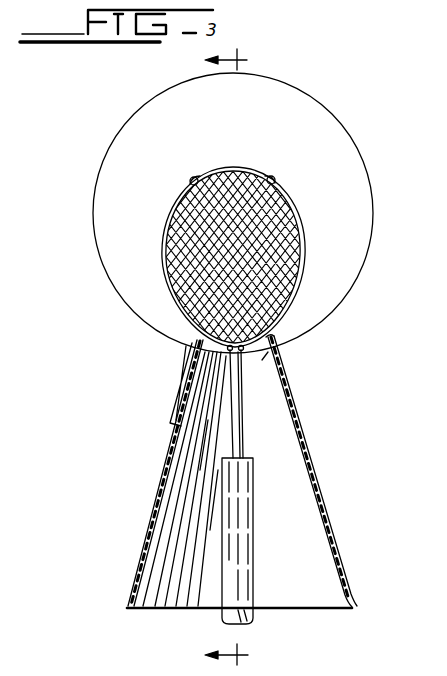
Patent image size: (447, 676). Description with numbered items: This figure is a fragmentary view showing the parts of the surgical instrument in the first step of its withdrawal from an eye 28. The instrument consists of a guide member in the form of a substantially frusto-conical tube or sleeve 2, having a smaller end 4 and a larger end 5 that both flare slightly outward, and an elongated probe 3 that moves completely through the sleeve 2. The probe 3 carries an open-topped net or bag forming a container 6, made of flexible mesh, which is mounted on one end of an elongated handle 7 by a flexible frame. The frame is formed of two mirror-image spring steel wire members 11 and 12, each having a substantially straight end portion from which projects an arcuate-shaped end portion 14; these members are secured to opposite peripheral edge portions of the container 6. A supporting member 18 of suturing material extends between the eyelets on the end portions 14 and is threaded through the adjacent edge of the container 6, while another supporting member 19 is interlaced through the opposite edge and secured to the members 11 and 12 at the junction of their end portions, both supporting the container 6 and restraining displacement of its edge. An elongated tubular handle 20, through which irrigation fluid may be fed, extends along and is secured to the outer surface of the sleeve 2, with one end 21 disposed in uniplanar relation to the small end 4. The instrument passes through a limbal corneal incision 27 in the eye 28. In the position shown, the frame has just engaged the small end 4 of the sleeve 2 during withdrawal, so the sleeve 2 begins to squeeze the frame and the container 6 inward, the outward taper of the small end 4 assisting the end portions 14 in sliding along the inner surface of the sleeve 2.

The sleeve 2 is at (312, 471).
The probe 3 is at (253, 620).
The smaller end 4 is at (270, 339).
The larger end 5 is at (143, 610).
The container 6 is at (280, 262).
The handle 7 is at (234, 358).
The elongated member 11 is at (231, 410).
The elongated member 12 is at (243, 403).
The arcuate-shaped end portion 14 is at (167, 228).
The supporting member 18 is at (219, 170).
The supporting member 19 is at (260, 331).
The handle 20 is at (182, 378).
The end 21 is at (196, 343).
The limbal corneal incision 27 is at (272, 353).
The eye 28 is at (351, 122).